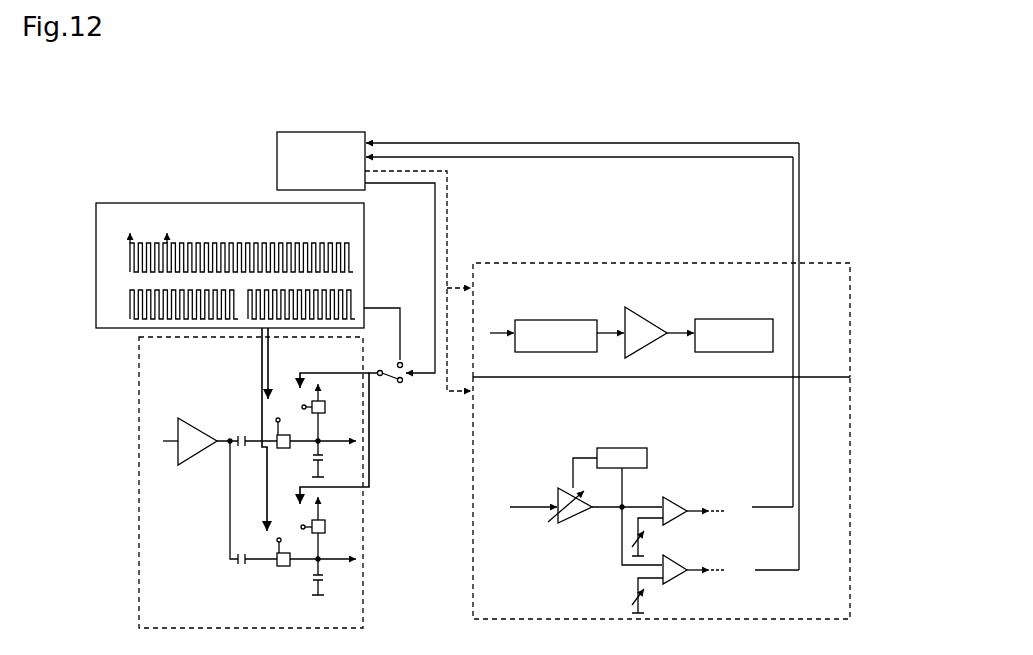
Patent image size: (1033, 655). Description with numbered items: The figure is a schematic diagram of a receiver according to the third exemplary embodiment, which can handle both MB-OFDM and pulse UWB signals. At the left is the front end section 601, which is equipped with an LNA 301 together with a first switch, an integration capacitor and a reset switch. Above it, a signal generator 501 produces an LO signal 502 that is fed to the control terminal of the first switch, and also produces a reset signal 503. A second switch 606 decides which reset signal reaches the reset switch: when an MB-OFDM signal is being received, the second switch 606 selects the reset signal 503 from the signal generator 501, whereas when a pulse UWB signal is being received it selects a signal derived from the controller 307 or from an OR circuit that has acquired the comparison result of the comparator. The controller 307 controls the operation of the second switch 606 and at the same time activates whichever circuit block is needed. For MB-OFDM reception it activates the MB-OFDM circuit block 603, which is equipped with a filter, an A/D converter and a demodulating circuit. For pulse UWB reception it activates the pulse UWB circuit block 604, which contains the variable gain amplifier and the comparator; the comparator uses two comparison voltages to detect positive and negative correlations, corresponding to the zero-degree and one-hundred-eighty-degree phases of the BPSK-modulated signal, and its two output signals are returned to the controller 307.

The controller 307 is at (298, 131).
The signal generator 501 is at (150, 203).
The LO signal 502 is at (226, 257).
The reset signal 503 is at (227, 304).
The front end section 601 is at (139, 415).
The LNA 301 is at (188, 420).
The second switch 606 is at (398, 362).
The MB-OFDM circuit block 603 is at (530, 263).
The pulse UWB circuit block 604 is at (471, 542).